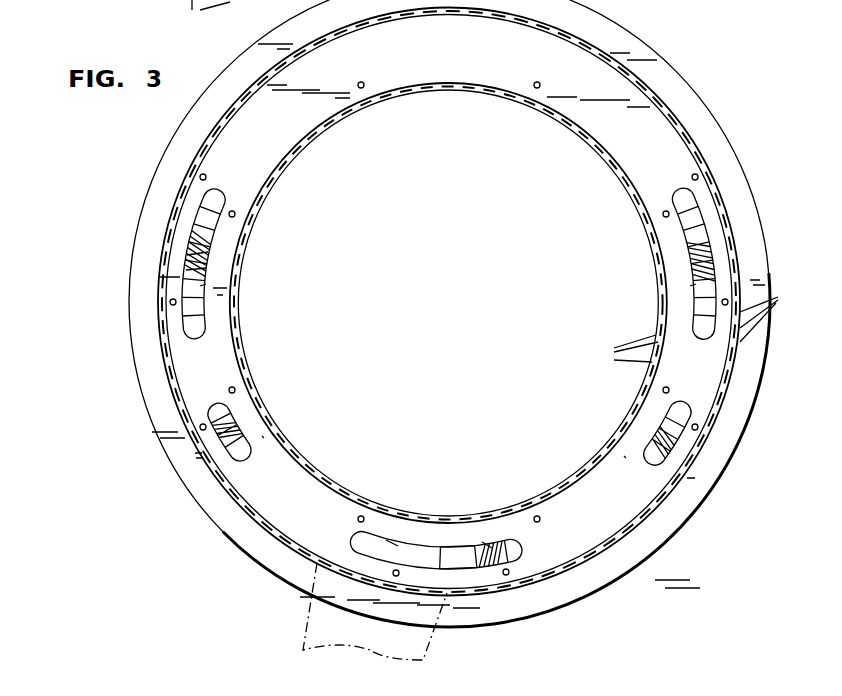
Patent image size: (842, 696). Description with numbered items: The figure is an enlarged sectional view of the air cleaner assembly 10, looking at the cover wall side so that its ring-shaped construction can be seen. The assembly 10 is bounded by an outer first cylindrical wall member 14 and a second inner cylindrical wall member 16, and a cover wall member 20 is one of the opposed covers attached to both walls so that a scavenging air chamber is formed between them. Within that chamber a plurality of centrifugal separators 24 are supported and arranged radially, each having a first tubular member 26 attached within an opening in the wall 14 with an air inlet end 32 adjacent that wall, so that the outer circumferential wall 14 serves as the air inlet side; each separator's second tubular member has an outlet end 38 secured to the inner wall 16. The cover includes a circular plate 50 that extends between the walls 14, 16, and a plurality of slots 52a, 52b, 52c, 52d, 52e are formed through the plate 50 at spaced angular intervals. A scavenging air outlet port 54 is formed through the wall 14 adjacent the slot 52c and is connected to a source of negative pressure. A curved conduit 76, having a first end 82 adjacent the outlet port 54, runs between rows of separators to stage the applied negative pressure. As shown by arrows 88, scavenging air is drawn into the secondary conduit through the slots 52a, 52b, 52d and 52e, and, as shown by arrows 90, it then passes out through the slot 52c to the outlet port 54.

The air cleaner assembly 10 is at (165, 548).
The first cylindrical wall member 14 is at (685, 131).
The second inner cylindrical wall member 16 is at (545, 110).
The cover wall member 20 is at (688, 78).
The centrifugal separator 24 is at (200, 250).
The first tubular member 26 is at (205, 235).
The air inlet end 32 is at (778, 311).
The outlet end 38 is at (620, 351).
The circular plate 50 is at (632, 162).
The slot 52a is at (220, 252).
The slot 52b is at (240, 424).
The slot 52c is at (410, 543).
The slot 52d is at (648, 425).
The slot 52e is at (688, 256).
The scavenging air outlet port 54 is at (350, 570).
The conduit 76 is at (475, 556).
The first end 82 is at (460, 560).
The arrows 88 is at (212, 292).
The arrows 90 is at (393, 545).